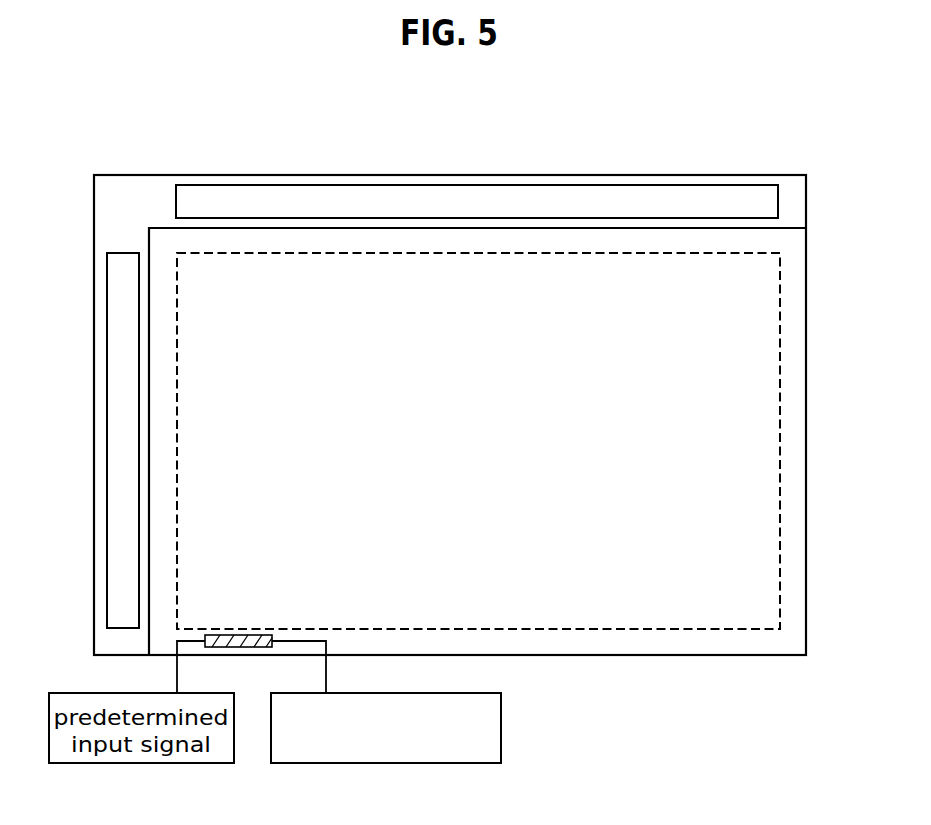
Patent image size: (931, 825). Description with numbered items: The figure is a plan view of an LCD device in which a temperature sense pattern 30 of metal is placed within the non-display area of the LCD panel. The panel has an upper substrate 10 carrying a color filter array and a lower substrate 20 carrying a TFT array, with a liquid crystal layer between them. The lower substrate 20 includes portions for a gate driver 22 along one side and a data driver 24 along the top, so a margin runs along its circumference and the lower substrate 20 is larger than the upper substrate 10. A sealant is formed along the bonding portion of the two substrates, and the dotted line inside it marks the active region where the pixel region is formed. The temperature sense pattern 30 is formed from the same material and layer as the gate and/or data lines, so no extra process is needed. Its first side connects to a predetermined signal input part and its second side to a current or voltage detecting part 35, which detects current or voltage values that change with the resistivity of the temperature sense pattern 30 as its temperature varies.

The upper substrate 10 is at (797, 242).
The lower substrate 20 is at (658, 181).
The gate driver 22 is at (112, 283).
The data driver 24 is at (578, 196).
The temperature sense pattern 30 is at (249, 635).
The current or voltage detecting part 35 is at (502, 737).